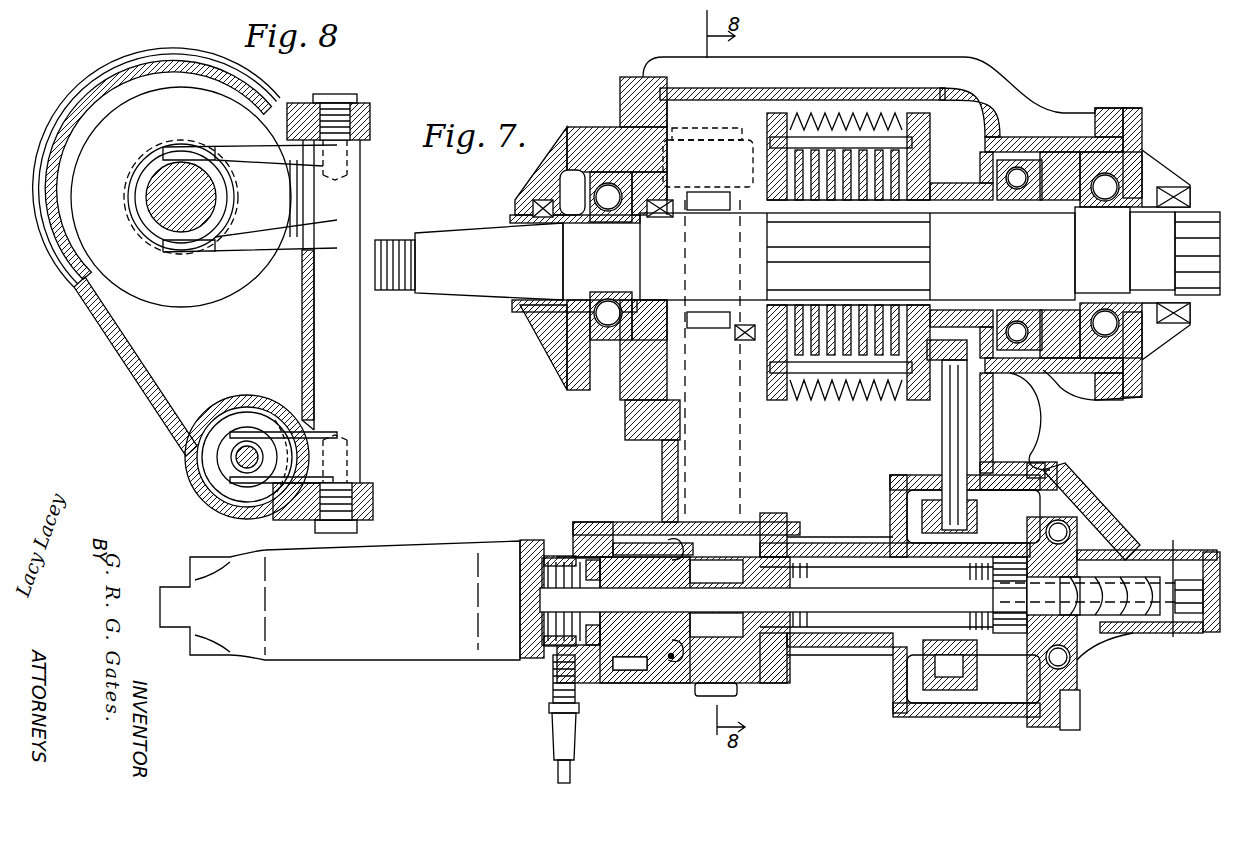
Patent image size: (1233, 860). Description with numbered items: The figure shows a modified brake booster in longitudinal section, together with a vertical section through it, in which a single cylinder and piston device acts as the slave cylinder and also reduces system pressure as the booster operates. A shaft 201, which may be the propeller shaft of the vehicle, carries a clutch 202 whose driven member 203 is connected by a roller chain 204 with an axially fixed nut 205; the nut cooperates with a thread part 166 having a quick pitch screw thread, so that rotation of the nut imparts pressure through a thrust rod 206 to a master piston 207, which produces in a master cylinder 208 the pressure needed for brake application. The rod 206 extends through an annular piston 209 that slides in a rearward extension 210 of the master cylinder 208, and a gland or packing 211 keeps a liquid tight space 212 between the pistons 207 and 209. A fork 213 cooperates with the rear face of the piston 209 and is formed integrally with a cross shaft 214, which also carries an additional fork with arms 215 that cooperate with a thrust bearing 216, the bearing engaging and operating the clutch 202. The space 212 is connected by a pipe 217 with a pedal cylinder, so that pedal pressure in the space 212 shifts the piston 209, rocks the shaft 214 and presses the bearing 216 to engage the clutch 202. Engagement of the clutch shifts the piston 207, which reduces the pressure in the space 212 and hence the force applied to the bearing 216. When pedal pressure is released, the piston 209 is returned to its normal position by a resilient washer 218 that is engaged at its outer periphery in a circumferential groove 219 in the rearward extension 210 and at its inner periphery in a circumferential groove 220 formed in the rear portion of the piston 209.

In FIG. 7, the thread part 166 is at (1155, 593).
In FIG. 8, the shaft 201 is at (153, 198).
In FIG. 7, the shaft 201 is at (590, 273).
In FIG. 7, the clutch 202 is at (878, 150).
In FIG. 7, the driven member 203 is at (1010, 372).
In FIG. 7, the roller chain 204 is at (945, 437).
In FIG. 7, the axially fixed nut 205 is at (973, 655).
In FIG. 8, the thrust rod 206 is at (245, 452).
In FIG. 7, the thrust rod 206 is at (820, 593).
In FIG. 7, the master piston 207 is at (527, 620).
In FIG. 7, the master cylinder 208 is at (327, 640).
In FIG. 8, the annular piston 209 is at (227, 458).
In FIG. 7, the annular piston 209 is at (630, 630).
In FIG. 7, the rearward extension 210 is at (628, 665).
In FIG. 7, the gland or packing 211 is at (608, 557).
In FIG. 7, the liquid tight space 212 is at (560, 557).
In FIG. 8, the fork 213 is at (293, 513).
In FIG. 7, the fork 213 is at (708, 600).
In FIG. 8, the cross shaft 214 is at (327, 295).
In FIG. 7, the cross shaft 214 is at (720, 453).
In FIG. 8, the arms 215 is at (262, 237).
In FIG. 7, the arms 215 is at (690, 312).
In FIG. 7, the thrust bearing 216 is at (738, 340).
In FIG. 7, the pipe 217 is at (550, 758).
In FIG. 8, the resilient washer 218 is at (217, 480).
In FIG. 7, the resilient washer 218 is at (700, 665).
In FIG. 7, the circumferential groove 219 is at (683, 660).
In FIG. 7, the circumferential groove 220 is at (690, 660).